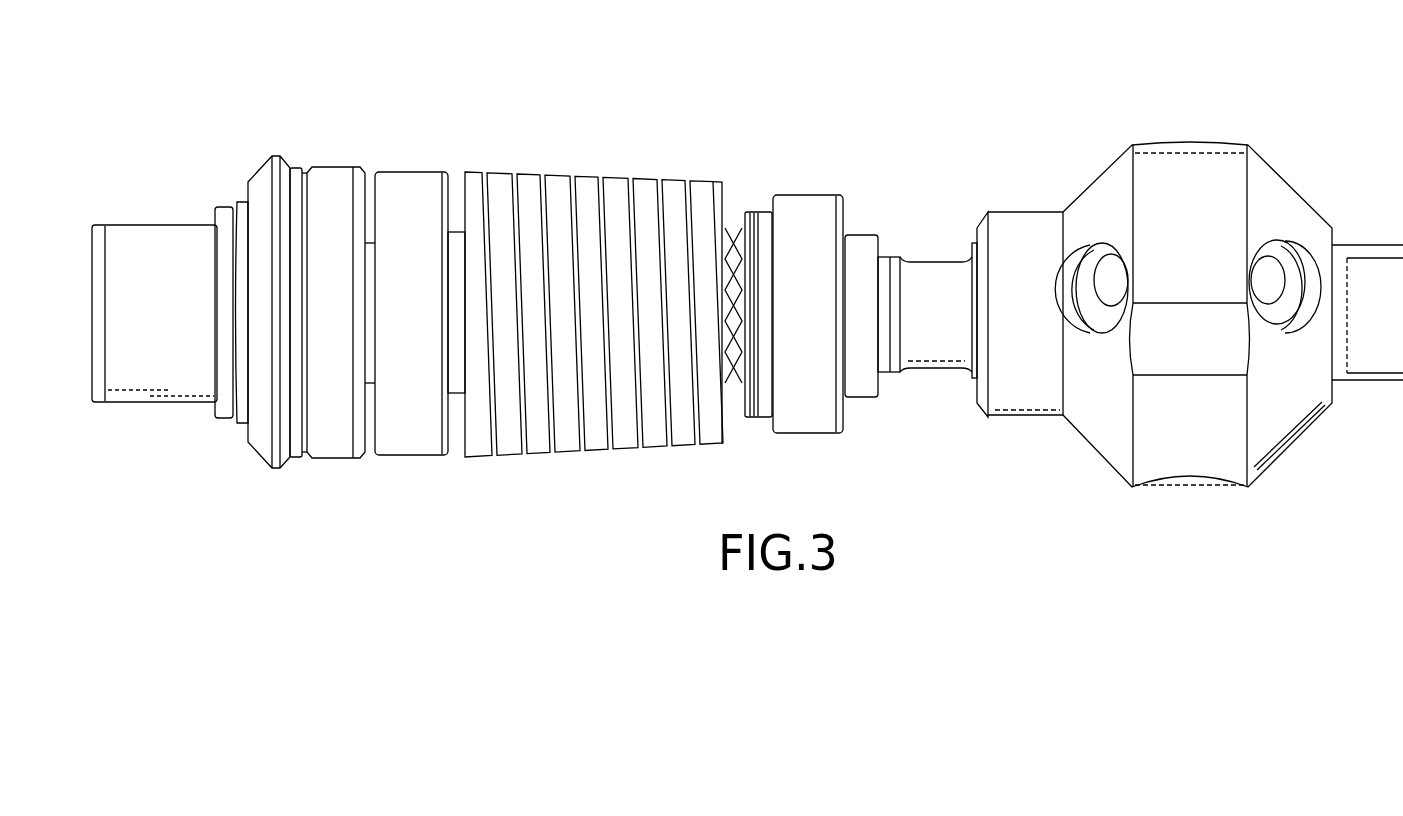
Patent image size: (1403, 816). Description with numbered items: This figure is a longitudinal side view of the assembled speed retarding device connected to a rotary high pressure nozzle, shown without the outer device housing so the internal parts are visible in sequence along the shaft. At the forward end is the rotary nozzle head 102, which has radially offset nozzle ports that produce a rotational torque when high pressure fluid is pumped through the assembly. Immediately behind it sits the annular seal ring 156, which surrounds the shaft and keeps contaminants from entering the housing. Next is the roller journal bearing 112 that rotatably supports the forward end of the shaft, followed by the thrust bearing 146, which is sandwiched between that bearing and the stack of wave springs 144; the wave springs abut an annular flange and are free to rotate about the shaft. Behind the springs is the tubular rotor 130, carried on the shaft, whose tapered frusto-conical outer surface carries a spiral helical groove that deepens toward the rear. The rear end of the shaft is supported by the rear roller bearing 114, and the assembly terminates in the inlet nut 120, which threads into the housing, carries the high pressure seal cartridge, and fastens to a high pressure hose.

The rotary nozzle head 102 is at (1292, 128).
The roller journal bearing 112 is at (818, 195).
The rear roller bearing 114 is at (400, 172).
The inlet nut 120 is at (262, 167).
The tubular rotor 130 is at (592, 172).
The stack of wave springs 144 is at (725, 384).
The thrust bearing 146 is at (748, 212).
The annular seal ring 156 is at (867, 235).